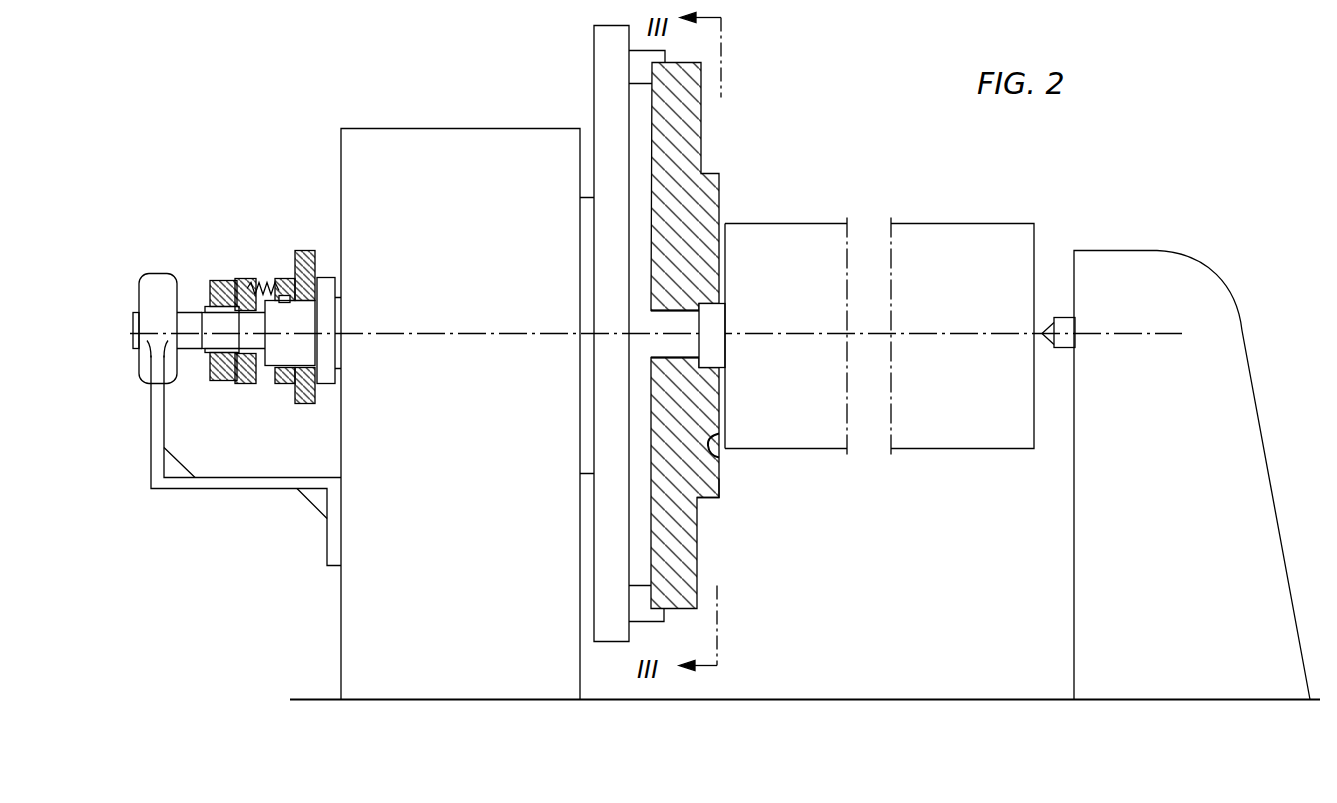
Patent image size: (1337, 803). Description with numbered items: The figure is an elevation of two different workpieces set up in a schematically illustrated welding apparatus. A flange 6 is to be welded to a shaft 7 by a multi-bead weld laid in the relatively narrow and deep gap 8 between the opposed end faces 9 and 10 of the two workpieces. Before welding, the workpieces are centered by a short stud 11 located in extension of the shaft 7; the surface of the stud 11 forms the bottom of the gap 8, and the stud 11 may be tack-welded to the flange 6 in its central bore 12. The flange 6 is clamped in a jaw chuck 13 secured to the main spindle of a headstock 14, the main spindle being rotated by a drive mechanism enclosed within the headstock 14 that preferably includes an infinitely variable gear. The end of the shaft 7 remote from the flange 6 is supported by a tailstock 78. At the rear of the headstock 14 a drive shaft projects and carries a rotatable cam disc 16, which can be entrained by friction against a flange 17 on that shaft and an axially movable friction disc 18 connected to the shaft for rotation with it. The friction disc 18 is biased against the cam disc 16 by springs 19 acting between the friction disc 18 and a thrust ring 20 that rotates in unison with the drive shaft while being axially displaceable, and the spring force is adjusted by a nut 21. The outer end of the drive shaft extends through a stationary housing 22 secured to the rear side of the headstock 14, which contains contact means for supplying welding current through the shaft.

The flange 6 is at (686, 558).
The shaft 7 is at (910, 433).
The gap 8 is at (722, 237).
The end face 9 is at (717, 483).
The end face 10 is at (718, 456).
The stud 11 is at (715, 320).
The central bore 12 is at (660, 345).
The jaw chuck 13 is at (600, 46).
The headstock 14 is at (357, 552).
The cam disc 16 is at (307, 402).
The flange 17 is at (327, 383).
The friction disc 18 is at (275, 382).
The springs 19 is at (262, 290).
The thrust ring 20 is at (243, 380).
The nut 21 is at (216, 283).
The stationary housing 22 is at (150, 290).
The tailstock 78 is at (1180, 262).